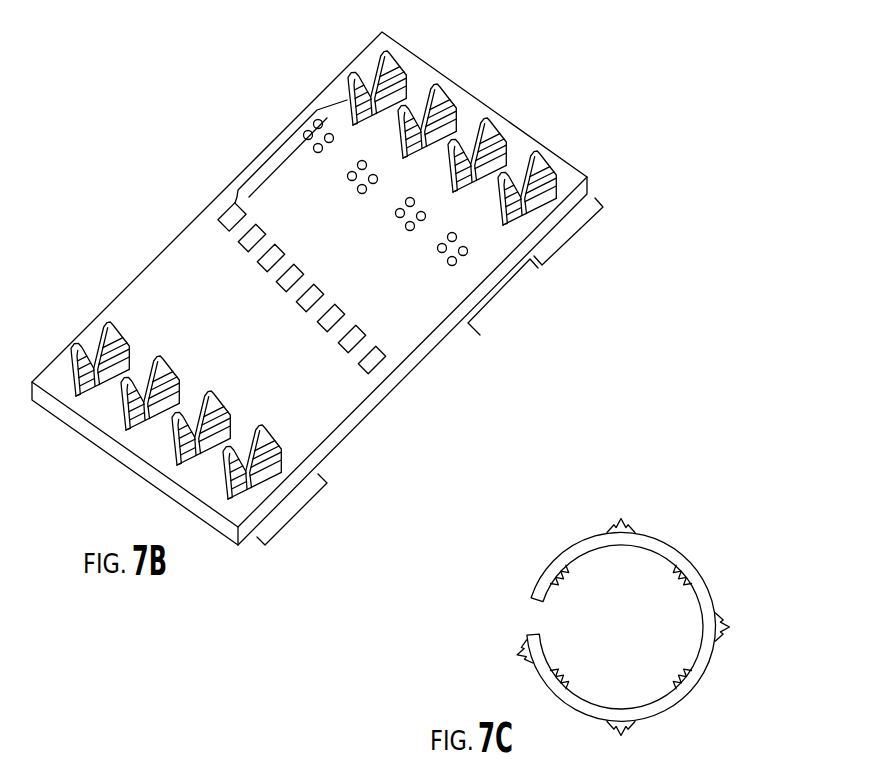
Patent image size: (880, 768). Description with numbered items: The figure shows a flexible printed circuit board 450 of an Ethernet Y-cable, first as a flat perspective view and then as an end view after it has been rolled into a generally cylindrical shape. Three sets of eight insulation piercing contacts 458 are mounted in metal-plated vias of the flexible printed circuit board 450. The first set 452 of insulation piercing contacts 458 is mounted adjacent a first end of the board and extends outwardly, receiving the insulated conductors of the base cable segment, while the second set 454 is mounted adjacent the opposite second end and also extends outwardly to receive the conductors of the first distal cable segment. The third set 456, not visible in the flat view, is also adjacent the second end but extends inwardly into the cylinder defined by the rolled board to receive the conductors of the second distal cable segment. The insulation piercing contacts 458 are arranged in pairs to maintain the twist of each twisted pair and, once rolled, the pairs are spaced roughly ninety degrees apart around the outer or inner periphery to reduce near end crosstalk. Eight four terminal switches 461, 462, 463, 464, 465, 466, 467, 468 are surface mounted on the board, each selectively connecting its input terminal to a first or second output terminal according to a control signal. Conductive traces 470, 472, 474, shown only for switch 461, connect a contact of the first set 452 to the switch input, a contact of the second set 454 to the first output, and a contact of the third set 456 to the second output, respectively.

In FIG. 7B, the flexible printed circuit board 450 is at (418, 347).
In FIG. 7C, the flexible printed circuit board 450 is at (556, 558).
In FIG. 7B, the first set of insulation piercing contacts 452 is at (297, 518).
In FIG. 7B, the second set of insulation piercing contacts 454 is at (572, 243).
In FIG. 7B, the third set of insulation piercing contacts 456 is at (510, 308).
In FIG. 7C, the third set of insulation piercing contacts 456 is at (665, 590).
In FIG. 7B, the insulation piercing contact 458 is at (388, 64).
In FIG. 7C, the insulation piercing contact 458 is at (609, 524).
In FIG. 7B, the four terminal switch 461 is at (226, 210).
In FIG. 7B, the four terminal switch 462 is at (243, 247).
In FIG. 7B, the four terminal switch 463 is at (262, 267).
In FIG. 7B, the four terminal switch 464 is at (281, 287).
In FIG. 7B, the four terminal switch 465 is at (301, 307).
In FIG. 7B, the four terminal switch 466 is at (322, 327).
In FIG. 7B, the four terminal switch 467 is at (343, 348).
In FIG. 7B, the four terminal switch 468 is at (363, 369).
In FIG. 7B, the conductive trace 470 is at (152, 296).
In FIG. 7B, the conductive trace 472 is at (268, 153).
In FIG. 7B, the conductive trace 474 is at (288, 165).